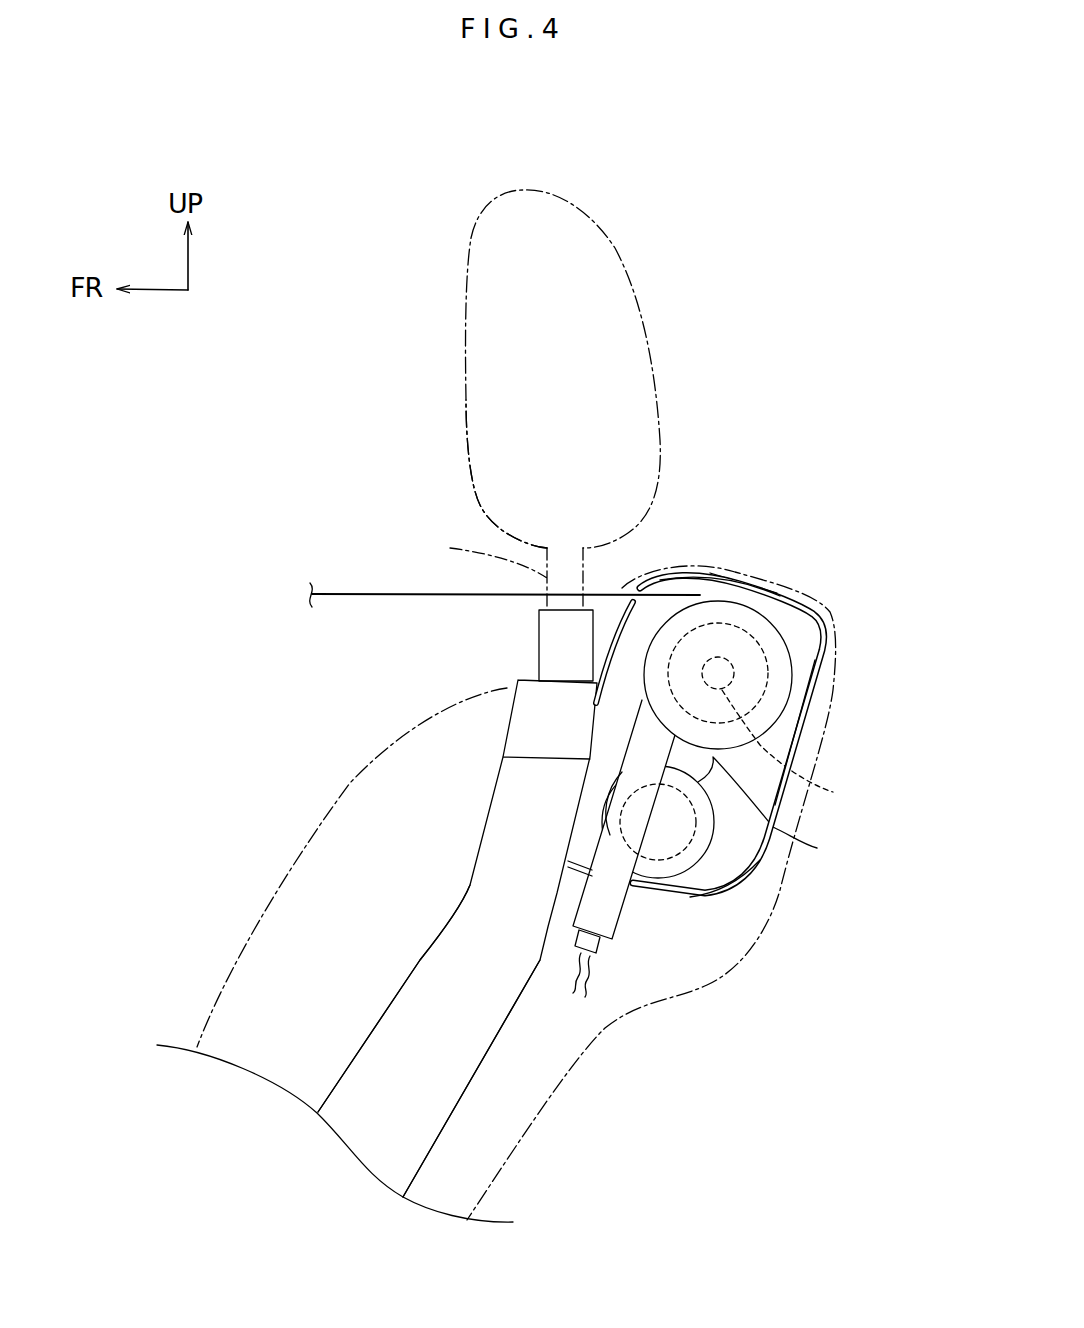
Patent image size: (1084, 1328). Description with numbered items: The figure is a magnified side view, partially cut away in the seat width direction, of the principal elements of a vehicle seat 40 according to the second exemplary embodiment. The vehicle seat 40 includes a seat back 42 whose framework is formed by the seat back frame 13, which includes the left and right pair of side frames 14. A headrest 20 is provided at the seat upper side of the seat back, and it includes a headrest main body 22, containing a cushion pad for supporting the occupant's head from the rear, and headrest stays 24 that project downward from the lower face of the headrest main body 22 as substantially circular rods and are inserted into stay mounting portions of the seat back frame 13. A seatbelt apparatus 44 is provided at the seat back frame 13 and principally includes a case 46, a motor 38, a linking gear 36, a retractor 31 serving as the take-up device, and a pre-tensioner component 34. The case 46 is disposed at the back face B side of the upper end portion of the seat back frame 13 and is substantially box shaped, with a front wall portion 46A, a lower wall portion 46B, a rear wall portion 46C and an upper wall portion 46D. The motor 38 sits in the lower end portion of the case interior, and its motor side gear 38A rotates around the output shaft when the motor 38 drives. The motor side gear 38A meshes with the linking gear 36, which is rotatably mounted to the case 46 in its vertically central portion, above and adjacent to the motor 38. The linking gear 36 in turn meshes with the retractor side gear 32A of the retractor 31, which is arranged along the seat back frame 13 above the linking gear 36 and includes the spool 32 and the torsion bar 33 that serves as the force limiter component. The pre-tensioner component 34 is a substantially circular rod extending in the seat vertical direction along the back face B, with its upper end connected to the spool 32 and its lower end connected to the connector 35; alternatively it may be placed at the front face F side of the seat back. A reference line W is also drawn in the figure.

The seat back frame 13 is at (494, 1100).
The side frames 14 is at (495, 1045).
The headrest 20 is at (657, 280).
The headrest main body 22 is at (650, 325).
The headrest stays 24 is at (450, 548).
The retractor 31 is at (791, 633).
The spool 32 is at (791, 654).
The retractor side gear 32A is at (765, 700).
The torsion bar 33 is at (785, 736).
The pre-tensioner component 34 is at (653, 895).
The connector 35 is at (607, 952).
The linking gear 36 is at (775, 810).
The motor 38 is at (704, 863).
The motor side gear 38A is at (697, 823).
The vehicle seat 40 is at (249, 651).
The seat back 42 is at (240, 889).
The seatbelt apparatus 44 is at (810, 548).
The case 46 is at (702, 576).
The front wall portion 46A is at (608, 650).
The lower wall portion 46B is at (723, 895).
The rear wall portion 46C is at (782, 787).
The upper wall portion 46D is at (772, 595).
The reference line W is at (390, 593).
The front face F is at (350, 1058).
The back face B is at (440, 1133).